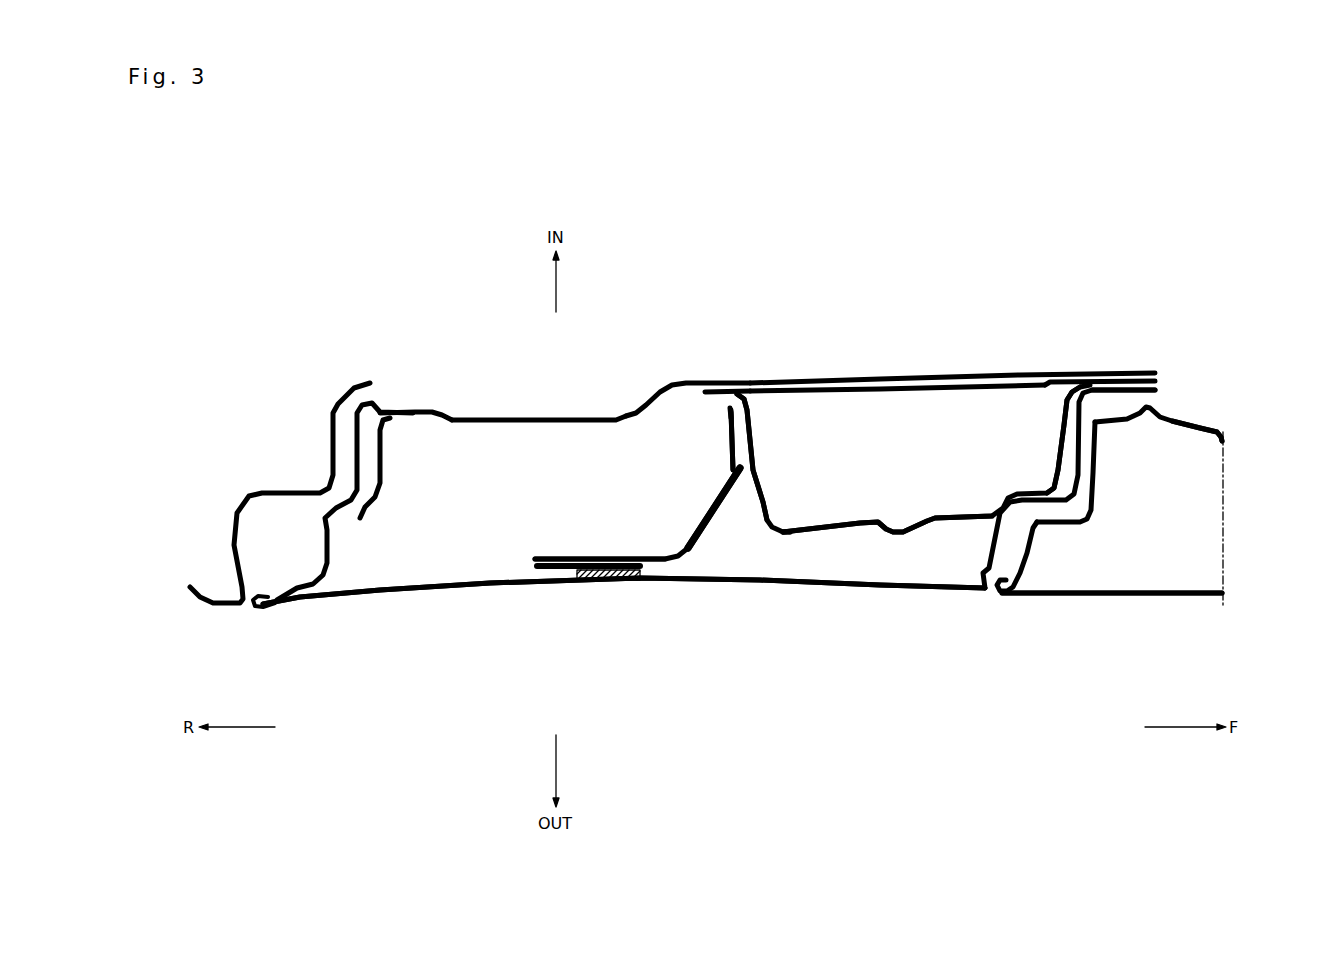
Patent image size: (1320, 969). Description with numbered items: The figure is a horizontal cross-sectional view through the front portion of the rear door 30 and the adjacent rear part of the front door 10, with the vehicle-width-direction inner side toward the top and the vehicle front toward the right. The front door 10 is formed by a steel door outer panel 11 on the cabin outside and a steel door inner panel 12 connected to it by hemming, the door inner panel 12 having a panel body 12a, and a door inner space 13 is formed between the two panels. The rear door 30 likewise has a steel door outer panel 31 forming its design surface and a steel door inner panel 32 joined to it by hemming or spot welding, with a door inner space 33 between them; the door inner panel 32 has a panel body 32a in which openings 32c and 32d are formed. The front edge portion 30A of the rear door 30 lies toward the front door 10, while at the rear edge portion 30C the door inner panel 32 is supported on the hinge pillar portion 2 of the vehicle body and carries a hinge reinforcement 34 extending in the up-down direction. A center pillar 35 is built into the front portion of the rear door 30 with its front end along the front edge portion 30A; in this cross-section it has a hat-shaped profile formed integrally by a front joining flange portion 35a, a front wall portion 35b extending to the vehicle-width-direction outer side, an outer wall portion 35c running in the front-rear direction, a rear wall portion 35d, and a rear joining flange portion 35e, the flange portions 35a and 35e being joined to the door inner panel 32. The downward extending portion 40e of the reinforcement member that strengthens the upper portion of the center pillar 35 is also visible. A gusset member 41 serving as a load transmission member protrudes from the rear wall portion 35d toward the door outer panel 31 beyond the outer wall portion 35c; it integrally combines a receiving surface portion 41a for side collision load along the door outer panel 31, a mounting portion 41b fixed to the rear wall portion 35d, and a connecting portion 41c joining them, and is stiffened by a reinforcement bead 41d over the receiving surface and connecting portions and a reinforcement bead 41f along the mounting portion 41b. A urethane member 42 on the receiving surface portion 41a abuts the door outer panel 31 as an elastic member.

The hinge pillar portion 2 is at (270, 491).
The front door 10 is at (1112, 606).
The door outer panel 11 is at (1167, 598).
The door inner panel 12 is at (1201, 414).
The panel body 12a is at (1217, 434).
The door inner space 13 is at (1174, 526).
The rear door 30 is at (737, 596).
The front edge portion 30A is at (1163, 378).
The rear edge portion 30C is at (314, 526).
The door outer panel 31 is at (489, 590).
The door inner panel 32 is at (685, 376).
The panel body 32a is at (414, 408).
The opening 32c is at (496, 417).
The opening 32d is at (884, 379).
The door inner space 33 is at (538, 483).
The hinge reinforcement 34 is at (357, 513).
The center pillar 35 is at (867, 535).
The joining flange portion 35a is at (1100, 377).
The front wall portion 35b is at (1062, 426).
The outer wall portion 35c is at (947, 514).
The rear wall portion 35d is at (753, 458).
The joining flange portion 35e is at (712, 394).
The downward extending portion 40e is at (786, 535).
The gusset member 41 is at (697, 575).
The receiving surface portion 41a is at (585, 558).
The mounting portion 41b is at (743, 437).
The connecting portion 41c is at (702, 523).
The reinforcement bead 41d is at (630, 553).
The reinforcement bead 41f is at (727, 425).
The urethane member 42 is at (605, 581).